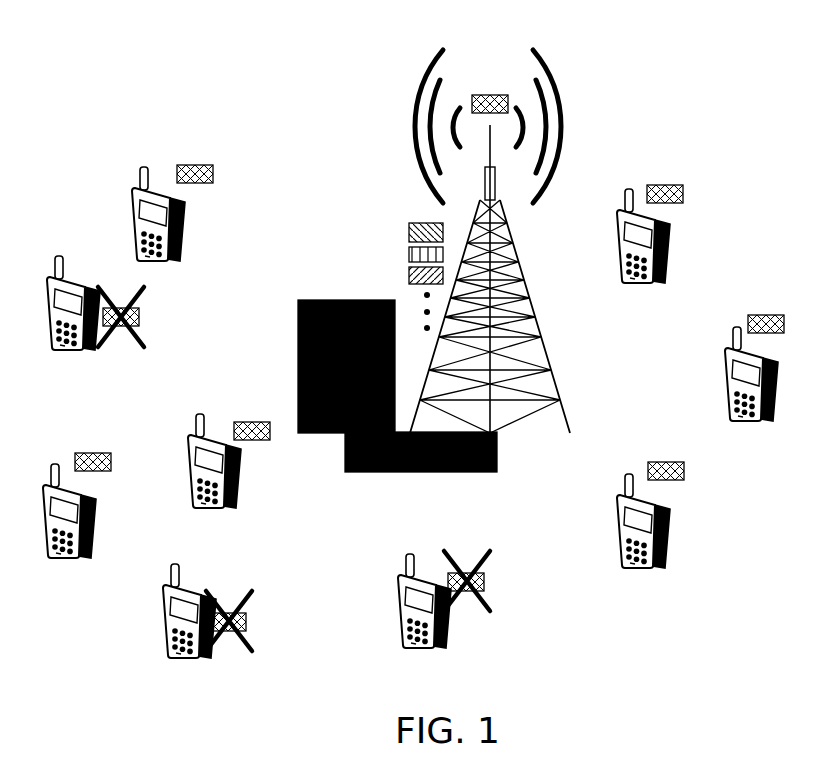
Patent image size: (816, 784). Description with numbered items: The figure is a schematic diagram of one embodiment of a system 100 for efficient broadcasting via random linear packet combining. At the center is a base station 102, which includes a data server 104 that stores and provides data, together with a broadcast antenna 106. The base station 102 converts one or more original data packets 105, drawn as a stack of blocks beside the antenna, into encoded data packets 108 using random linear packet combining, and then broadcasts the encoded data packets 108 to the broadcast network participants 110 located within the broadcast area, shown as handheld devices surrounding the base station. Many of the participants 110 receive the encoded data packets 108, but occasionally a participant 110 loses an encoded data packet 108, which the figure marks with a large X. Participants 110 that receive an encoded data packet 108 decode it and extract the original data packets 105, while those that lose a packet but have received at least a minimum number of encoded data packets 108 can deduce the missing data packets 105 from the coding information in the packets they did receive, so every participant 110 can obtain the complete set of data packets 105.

The system 100 is at (68, 60).
The base station 102 is at (396, 128).
The data server 104 is at (298, 366).
The data packets 105 is at (408, 238).
The broadcast antenna 106 is at (491, 152).
The encoded data packets 108 is at (490, 95).
The broadcast network participants 110 is at (138, 187).